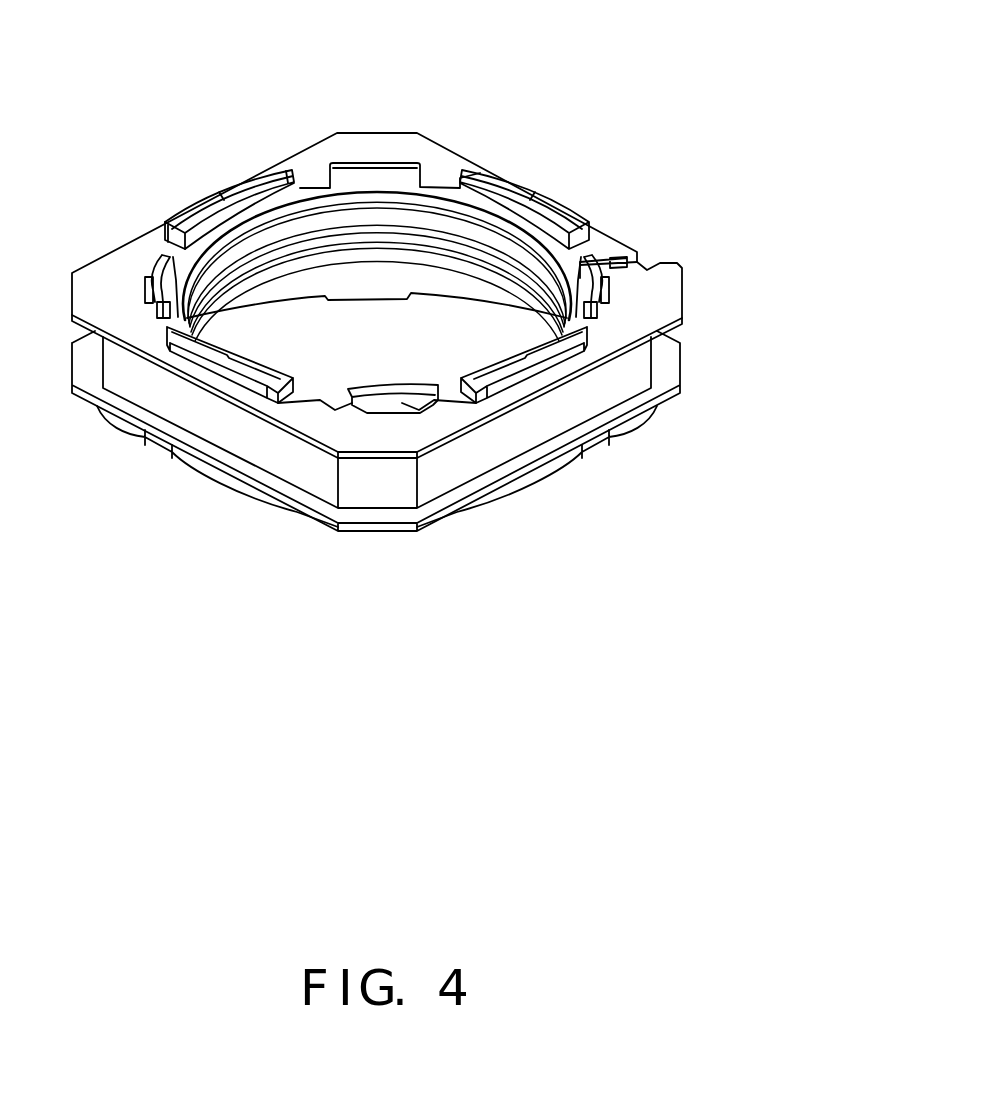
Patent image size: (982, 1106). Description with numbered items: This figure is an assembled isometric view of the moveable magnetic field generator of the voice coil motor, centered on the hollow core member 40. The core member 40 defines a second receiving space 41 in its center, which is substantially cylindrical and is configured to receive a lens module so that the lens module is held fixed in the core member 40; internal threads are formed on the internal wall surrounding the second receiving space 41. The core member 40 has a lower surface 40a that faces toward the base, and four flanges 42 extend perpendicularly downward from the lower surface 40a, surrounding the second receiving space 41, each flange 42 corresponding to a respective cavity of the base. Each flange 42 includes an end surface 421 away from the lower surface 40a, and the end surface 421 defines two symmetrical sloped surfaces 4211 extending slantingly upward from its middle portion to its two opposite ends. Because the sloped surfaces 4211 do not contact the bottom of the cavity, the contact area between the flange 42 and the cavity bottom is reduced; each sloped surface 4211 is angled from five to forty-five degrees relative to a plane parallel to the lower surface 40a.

The core member 40 is at (506, 66).
The lower surface 40a is at (427, 152).
The second receiving space 41 is at (523, 262).
The flange 42 is at (367, 320).
The end surface 421 is at (184, 188).
The sloped surface 4211 is at (258, 177).